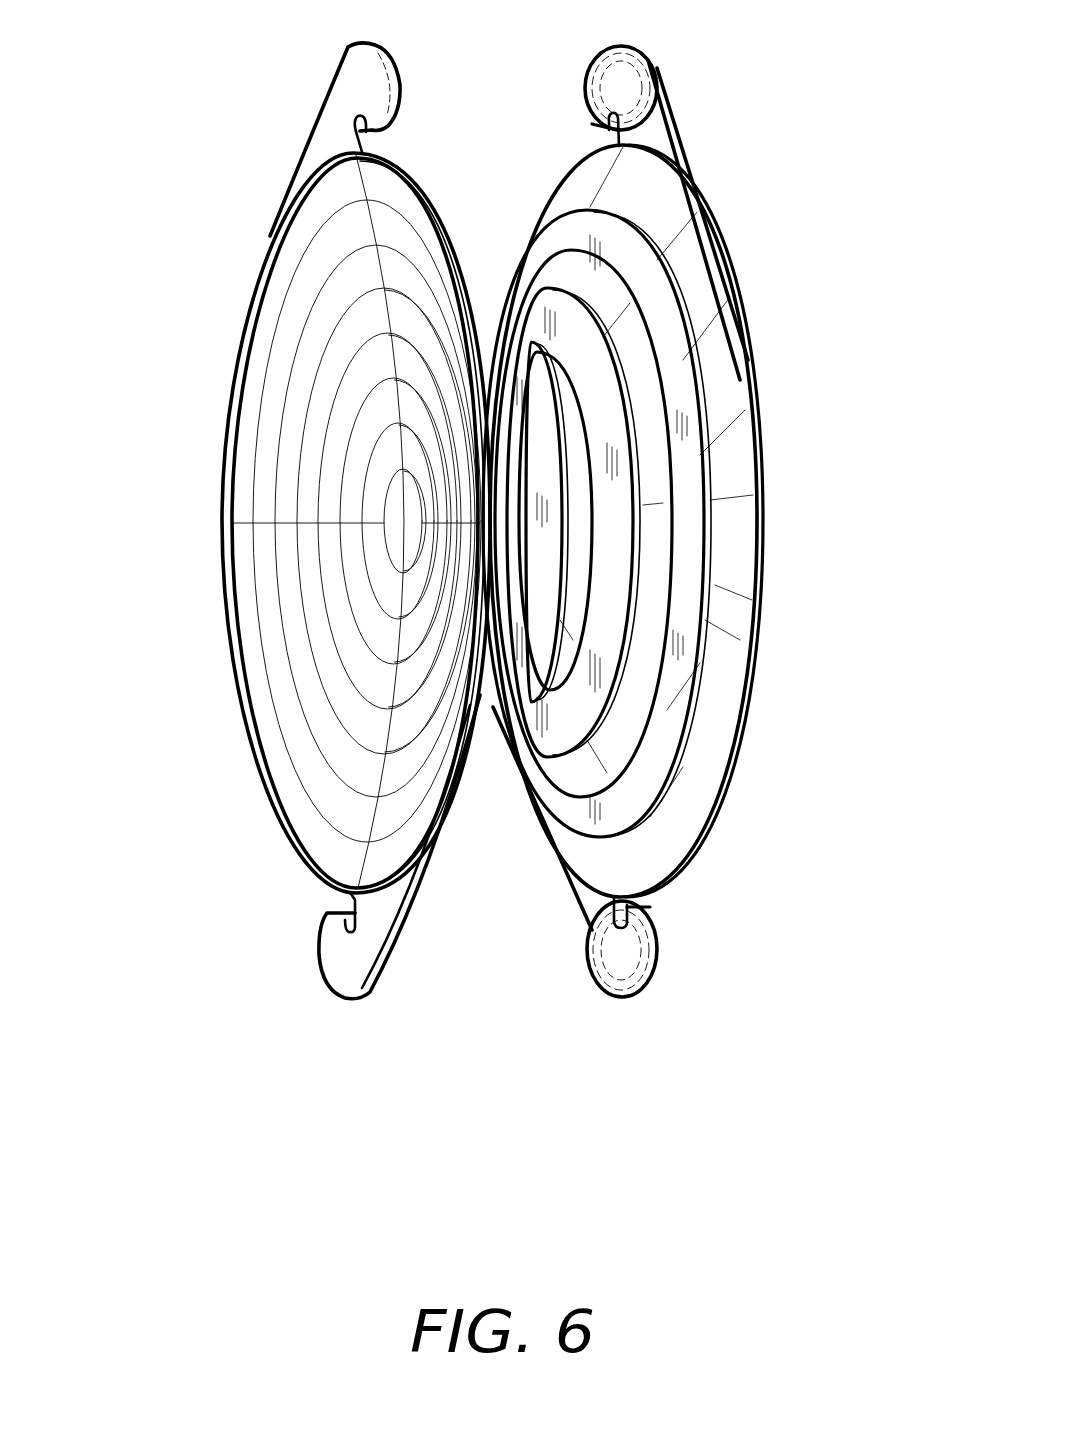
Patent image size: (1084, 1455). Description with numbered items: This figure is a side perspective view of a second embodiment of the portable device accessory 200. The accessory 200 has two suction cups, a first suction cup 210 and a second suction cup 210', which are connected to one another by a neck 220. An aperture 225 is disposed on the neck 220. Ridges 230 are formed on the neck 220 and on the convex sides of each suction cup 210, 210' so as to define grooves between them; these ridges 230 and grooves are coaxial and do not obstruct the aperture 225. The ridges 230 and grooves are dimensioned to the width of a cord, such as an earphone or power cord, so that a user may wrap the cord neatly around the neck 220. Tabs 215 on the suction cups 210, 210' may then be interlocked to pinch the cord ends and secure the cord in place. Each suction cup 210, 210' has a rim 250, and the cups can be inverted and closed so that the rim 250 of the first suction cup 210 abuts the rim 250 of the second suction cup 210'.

The portable device accessory 200 is at (482, 117).
The first suction cup 210 is at (266, 521).
The second suction cup 210' is at (722, 521).
The tabs 215 is at (334, 90).
The neck 220 is at (576, 525).
The aperture 225 is at (546, 427).
The ridge 230 is at (662, 315).
The rim 250 is at (243, 777).